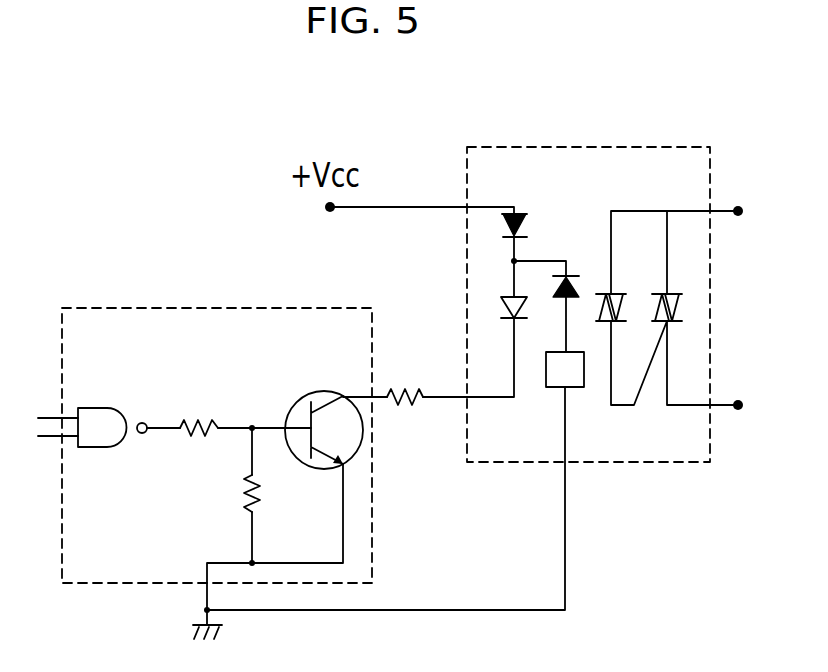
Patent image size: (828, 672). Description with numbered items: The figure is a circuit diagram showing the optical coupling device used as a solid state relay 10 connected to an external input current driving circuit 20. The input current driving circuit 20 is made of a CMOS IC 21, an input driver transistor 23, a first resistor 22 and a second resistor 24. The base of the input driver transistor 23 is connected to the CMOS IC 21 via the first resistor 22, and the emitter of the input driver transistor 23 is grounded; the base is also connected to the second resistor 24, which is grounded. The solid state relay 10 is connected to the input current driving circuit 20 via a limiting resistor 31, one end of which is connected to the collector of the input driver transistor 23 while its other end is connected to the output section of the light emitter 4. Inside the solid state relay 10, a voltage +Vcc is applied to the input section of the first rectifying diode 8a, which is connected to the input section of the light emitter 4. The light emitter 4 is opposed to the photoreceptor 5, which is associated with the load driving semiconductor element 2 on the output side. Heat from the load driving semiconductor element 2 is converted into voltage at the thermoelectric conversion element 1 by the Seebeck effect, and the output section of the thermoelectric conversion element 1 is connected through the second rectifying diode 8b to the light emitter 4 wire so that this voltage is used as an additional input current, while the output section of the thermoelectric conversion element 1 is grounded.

The thermoelectric conversion element 1 is at (574, 387).
The load driving semiconductor element 2 is at (668, 294).
The light emitter 4 is at (510, 300).
The photoreceptor 5 is at (613, 294).
The first rectifying diode 8a is at (520, 214).
The second rectifying diode 8b is at (578, 290).
The solid state relay 10 is at (500, 147).
The input current driving circuit 20 is at (328, 308).
The CMOS IC 21 is at (97, 408).
The first resistor 22 is at (197, 412).
The input driver transistor 23 is at (312, 393).
The second resistor 24 is at (240, 500).
The limiting resistor 31 is at (405, 387).